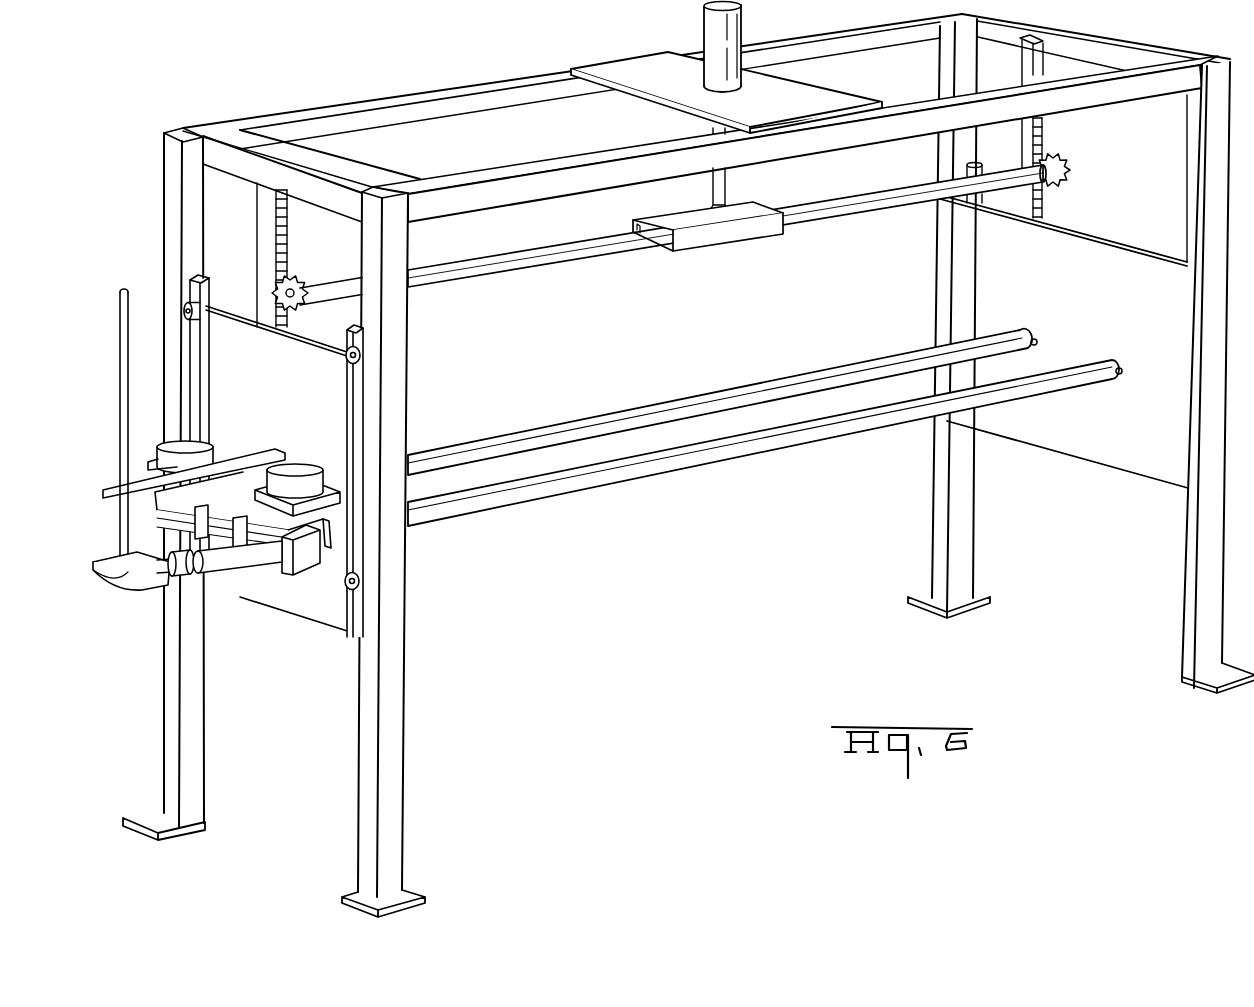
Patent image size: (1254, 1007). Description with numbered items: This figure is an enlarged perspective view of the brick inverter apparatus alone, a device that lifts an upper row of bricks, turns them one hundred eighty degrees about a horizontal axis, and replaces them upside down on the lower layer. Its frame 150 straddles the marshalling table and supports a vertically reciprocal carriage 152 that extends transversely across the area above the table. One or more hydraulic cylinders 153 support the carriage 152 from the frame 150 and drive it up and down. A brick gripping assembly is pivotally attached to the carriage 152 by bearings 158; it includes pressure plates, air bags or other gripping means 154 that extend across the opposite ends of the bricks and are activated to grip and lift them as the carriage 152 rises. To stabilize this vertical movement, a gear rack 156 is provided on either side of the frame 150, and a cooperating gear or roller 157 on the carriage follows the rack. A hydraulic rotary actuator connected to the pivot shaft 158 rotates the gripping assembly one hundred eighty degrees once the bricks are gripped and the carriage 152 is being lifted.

The frame 150 is at (444, 64).
The vertically reciprocal carriage 152 is at (838, 208).
The hydraulic cylinder 153 is at (704, 30).
The gripping means 154 is at (633, 413).
The gear rack 156 is at (287, 221).
The gear or roller 157 is at (300, 281).
The bearings 158 is at (1027, 336).